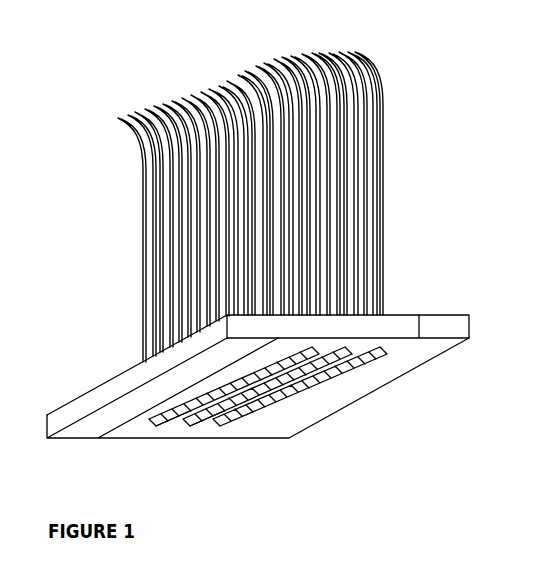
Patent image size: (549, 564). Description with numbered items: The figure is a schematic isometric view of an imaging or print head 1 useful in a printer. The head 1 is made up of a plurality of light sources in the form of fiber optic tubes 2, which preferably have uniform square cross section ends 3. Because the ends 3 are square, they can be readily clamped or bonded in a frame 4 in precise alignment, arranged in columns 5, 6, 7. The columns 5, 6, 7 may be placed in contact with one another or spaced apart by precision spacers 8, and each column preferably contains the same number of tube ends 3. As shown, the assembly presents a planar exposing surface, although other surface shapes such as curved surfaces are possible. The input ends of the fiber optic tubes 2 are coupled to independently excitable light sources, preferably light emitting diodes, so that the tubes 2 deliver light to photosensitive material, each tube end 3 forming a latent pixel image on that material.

The imaging head 1 is at (86, 329).
The fiber optic tubes 2 is at (392, 212).
The square cross section ends 3 is at (242, 430).
The frame 4 is at (399, 312).
The column 5 is at (211, 427).
The column 6 is at (173, 424).
The column 7 is at (140, 424).
The precision spacers 8 is at (189, 434).